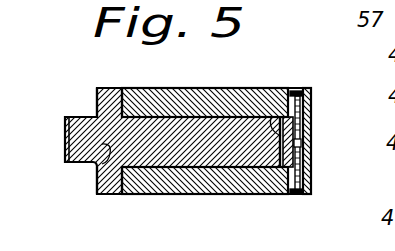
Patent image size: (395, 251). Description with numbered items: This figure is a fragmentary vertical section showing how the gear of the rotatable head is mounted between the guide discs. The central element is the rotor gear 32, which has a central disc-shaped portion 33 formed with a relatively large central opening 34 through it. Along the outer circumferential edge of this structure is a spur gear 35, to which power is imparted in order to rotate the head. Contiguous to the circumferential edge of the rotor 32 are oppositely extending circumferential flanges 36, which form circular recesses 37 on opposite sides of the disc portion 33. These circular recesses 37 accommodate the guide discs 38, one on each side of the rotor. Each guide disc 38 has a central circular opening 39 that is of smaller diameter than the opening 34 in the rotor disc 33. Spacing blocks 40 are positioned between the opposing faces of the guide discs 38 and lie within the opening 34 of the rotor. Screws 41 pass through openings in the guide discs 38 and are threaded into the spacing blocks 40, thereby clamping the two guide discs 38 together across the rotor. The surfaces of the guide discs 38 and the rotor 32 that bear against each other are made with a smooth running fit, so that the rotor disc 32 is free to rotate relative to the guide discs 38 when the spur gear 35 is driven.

The rotor gear 32 is at (100, 165).
The central disc-shaped portion 33 is at (175, 138).
The central opening 34 is at (293, 90).
The spur gear 35 is at (64, 133).
The circumferential flanges 36 is at (111, 87).
The circular recesses 37 is at (217, 113).
The guide discs 38 is at (150, 103).
The central circular opening 39 is at (313, 101).
The spacing blocks 40 is at (312, 133).
The screws 41 is at (302, 89).